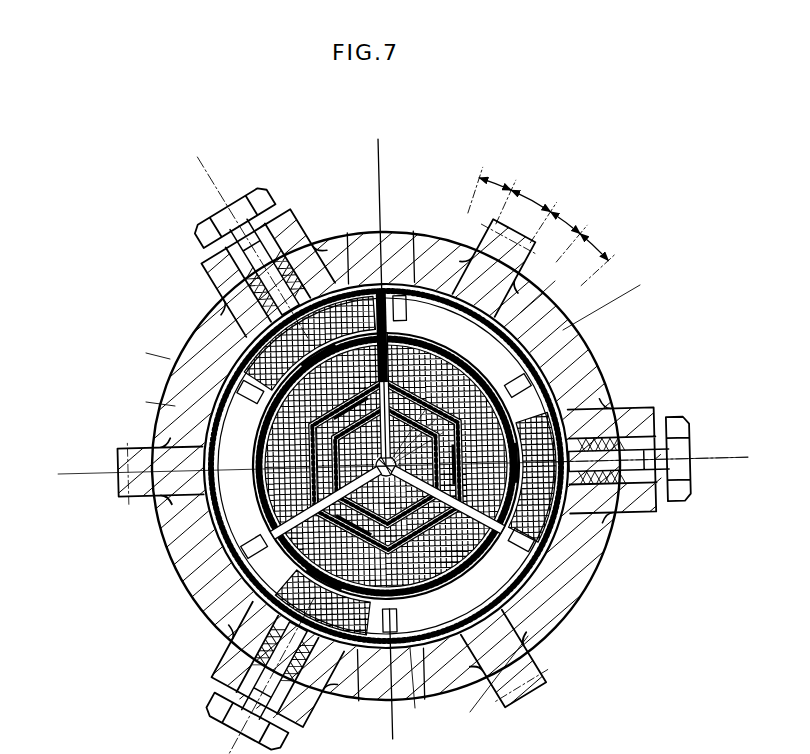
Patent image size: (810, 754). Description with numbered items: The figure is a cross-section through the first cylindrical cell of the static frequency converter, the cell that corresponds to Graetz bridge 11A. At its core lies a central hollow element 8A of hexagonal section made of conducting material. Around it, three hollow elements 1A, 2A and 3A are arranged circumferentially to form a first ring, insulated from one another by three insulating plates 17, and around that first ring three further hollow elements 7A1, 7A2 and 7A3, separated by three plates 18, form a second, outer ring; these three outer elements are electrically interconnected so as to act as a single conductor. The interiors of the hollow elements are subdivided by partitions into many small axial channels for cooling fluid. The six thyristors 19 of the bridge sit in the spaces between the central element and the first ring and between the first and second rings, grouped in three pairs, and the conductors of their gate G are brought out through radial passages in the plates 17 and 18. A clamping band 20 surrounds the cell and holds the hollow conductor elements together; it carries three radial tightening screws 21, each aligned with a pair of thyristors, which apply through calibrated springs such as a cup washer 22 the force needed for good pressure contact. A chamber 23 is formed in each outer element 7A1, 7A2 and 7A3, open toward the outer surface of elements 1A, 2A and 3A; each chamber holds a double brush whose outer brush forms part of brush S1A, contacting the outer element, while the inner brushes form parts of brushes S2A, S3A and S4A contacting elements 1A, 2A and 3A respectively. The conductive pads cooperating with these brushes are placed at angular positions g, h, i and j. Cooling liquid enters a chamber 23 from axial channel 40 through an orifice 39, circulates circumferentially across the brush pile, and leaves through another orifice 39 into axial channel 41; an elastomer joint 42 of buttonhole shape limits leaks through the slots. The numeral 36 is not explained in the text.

The hollow element 1A is at (590, 543).
The hollow element 2A is at (217, 629).
The hollow element 3A is at (347, 337).
The outer hollow element 7A1 is at (588, 368).
The outer hollow element 7A2 is at (358, 683).
The outer hollow element 7A3 is at (200, 284).
The central hollow element 8A is at (530, 630).
The Graetz bridge 11A is at (150, 292).
The insulating plate 17 is at (190, 594).
The plate 18 is at (165, 584).
The thyristor 19 is at (197, 312).
The clamping band 20 is at (150, 378).
The radial tightening screw 21 is at (255, 186).
The cup washer 22 is at (296, 252).
The chamber 23 is at (238, 461).
The housing flange 36 is at (157, 517).
The orifice 39 is at (428, 300).
The axial channel 40 is at (390, 305).
The axial channel 41 is at (182, 333).
The elastomer joint 42 is at (190, 433).
The gate G is at (373, 160).
The brush S1A is at (368, 506).
The brush S2A is at (552, 284).
The brush S3A is at (481, 681).
The brush S4A is at (136, 397).
The angular position g is at (492, 188).
The angular position h is at (533, 208).
The angular position i is at (569, 228).
The angular position j is at (598, 252).